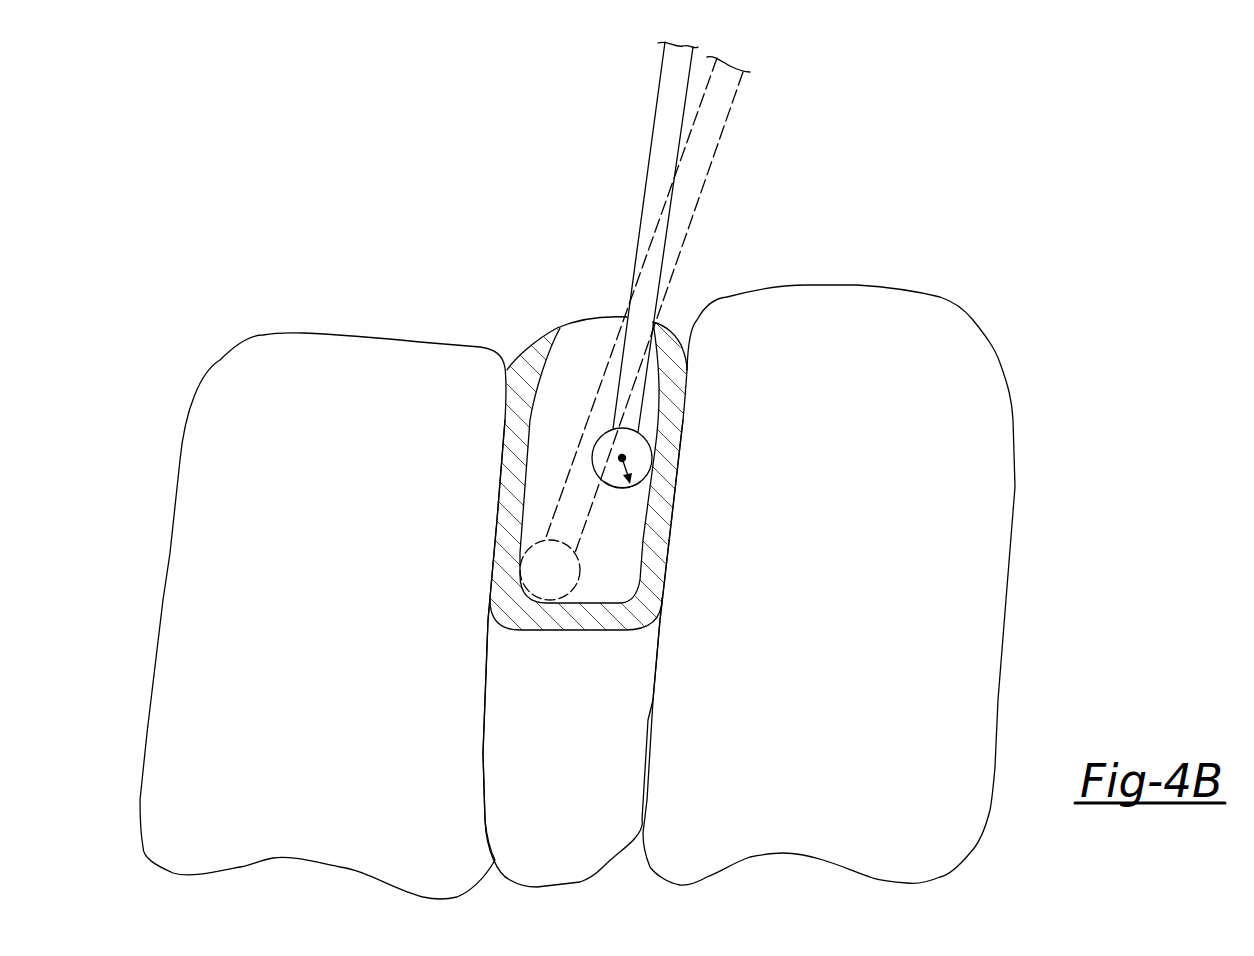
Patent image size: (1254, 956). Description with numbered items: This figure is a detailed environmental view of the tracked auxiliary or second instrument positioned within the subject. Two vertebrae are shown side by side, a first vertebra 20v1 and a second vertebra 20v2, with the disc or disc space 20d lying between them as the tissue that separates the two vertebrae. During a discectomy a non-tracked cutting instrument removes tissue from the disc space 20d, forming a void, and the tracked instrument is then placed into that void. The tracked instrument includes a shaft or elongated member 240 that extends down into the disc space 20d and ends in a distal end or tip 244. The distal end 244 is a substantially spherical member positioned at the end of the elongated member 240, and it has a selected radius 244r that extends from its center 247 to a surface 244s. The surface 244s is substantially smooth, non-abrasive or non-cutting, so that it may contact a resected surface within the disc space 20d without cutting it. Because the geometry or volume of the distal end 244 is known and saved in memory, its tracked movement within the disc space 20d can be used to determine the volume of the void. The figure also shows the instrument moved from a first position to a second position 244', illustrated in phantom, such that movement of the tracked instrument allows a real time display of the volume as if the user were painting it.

The elongated member 240 is at (655, 112).
The distal end 244 is at (587, 475).
The radius 244r is at (628, 457).
The pivot point 247 is at (653, 461).
The surface 244s is at (624, 489).
The second position 244' is at (550, 620).
The disc space 20d is at (597, 889).
The first vertebra 20v1 is at (177, 792).
The second vertebra 20v2 is at (960, 370).